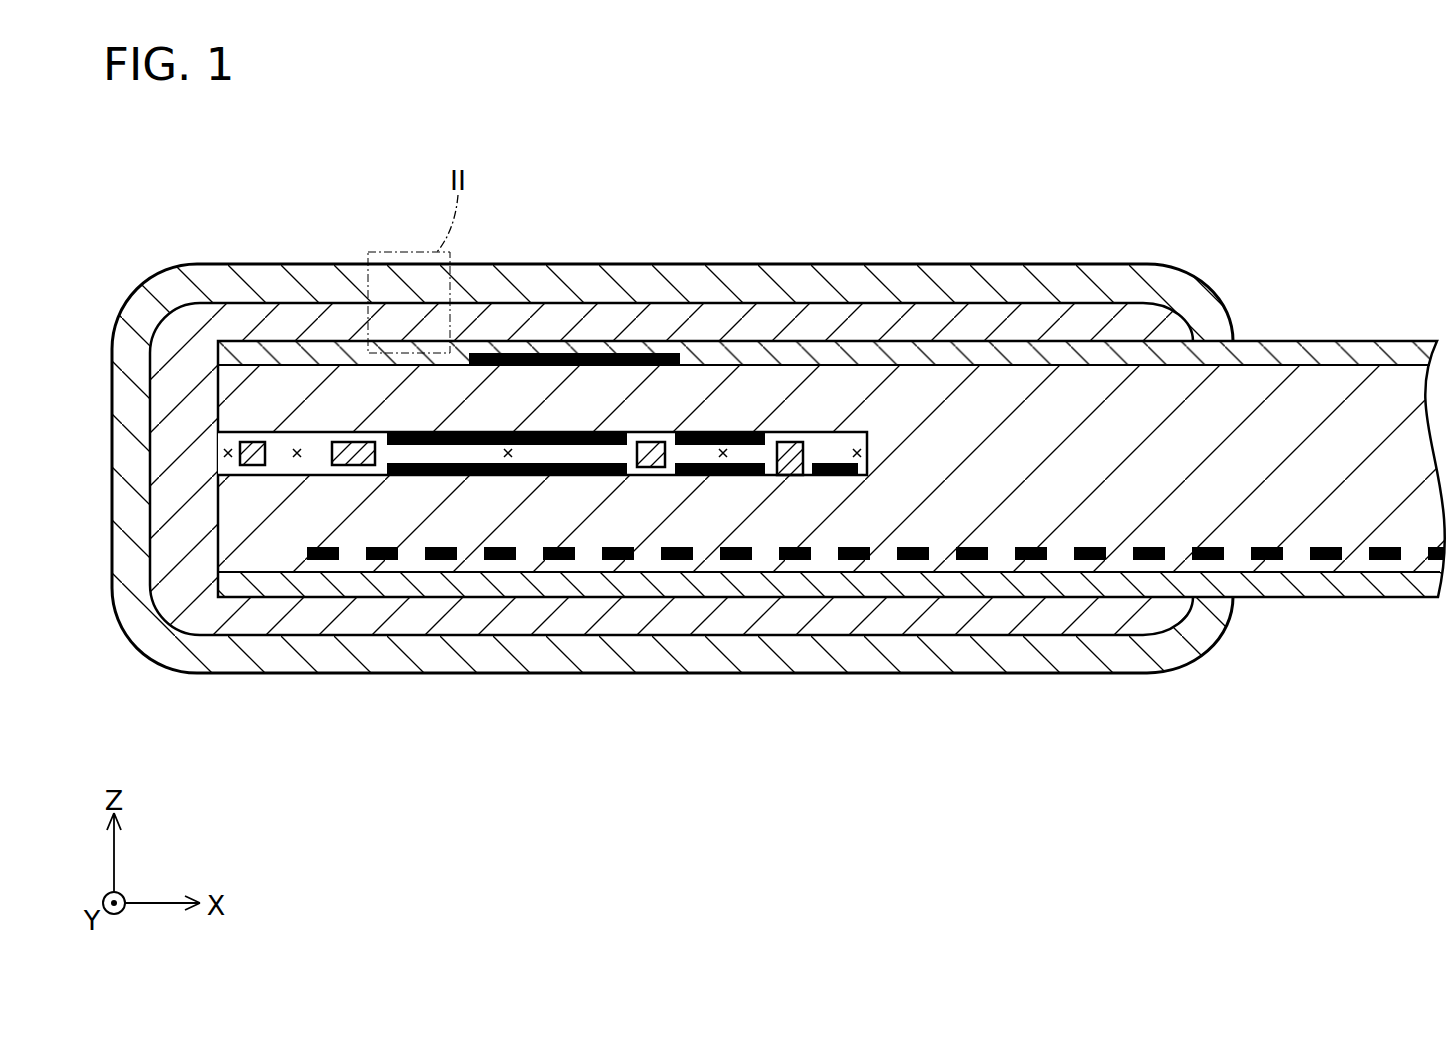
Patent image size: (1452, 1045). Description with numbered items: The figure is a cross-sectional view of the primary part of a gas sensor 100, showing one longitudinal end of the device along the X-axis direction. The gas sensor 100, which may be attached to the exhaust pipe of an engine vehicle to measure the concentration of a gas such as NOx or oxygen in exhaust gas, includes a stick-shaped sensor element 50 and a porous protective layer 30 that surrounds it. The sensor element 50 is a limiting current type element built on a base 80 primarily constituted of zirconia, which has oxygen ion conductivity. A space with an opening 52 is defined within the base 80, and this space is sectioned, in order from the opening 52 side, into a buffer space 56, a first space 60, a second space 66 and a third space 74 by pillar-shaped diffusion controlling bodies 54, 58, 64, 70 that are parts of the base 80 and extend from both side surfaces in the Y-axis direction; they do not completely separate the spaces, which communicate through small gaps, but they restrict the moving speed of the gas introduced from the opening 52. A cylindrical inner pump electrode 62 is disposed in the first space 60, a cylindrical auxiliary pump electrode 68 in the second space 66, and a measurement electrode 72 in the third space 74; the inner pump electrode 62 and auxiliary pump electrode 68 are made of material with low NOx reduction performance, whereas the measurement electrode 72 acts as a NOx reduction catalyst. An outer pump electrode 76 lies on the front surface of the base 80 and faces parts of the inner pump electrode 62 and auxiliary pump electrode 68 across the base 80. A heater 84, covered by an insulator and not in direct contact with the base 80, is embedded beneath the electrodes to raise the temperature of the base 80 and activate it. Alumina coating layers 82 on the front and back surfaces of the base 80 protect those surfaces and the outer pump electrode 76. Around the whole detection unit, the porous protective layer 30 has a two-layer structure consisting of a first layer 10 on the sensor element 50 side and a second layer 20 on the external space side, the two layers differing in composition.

The gas sensor 100 is at (1396, 198).
The first layer 10 is at (308, 325).
The second layer 20 is at (262, 283).
The porous protective layer 30 is at (355, 162).
The sensor element 50 is at (991, 325).
The opening 52 is at (228, 450).
The diffusion controlling body 54 is at (252, 462).
The buffer space 56 is at (298, 450).
The diffusion controlling body 58 is at (360, 465).
The first space 60 is at (508, 448).
The inner pump electrode 62 is at (410, 455).
The diffusion controlling body 64 is at (652, 458).
The second space 66 is at (723, 448).
The auxiliary pump electrode 68 is at (690, 447).
The diffusion controlling body 70 is at (793, 465).
The measurement electrode 72 is at (838, 470).
The third space 74 is at (857, 448).
The outer pump electrode 76 is at (627, 352).
The base 80 is at (1295, 555).
The coating layer 82 is at (1355, 587).
The heater 84 is at (1417, 573).